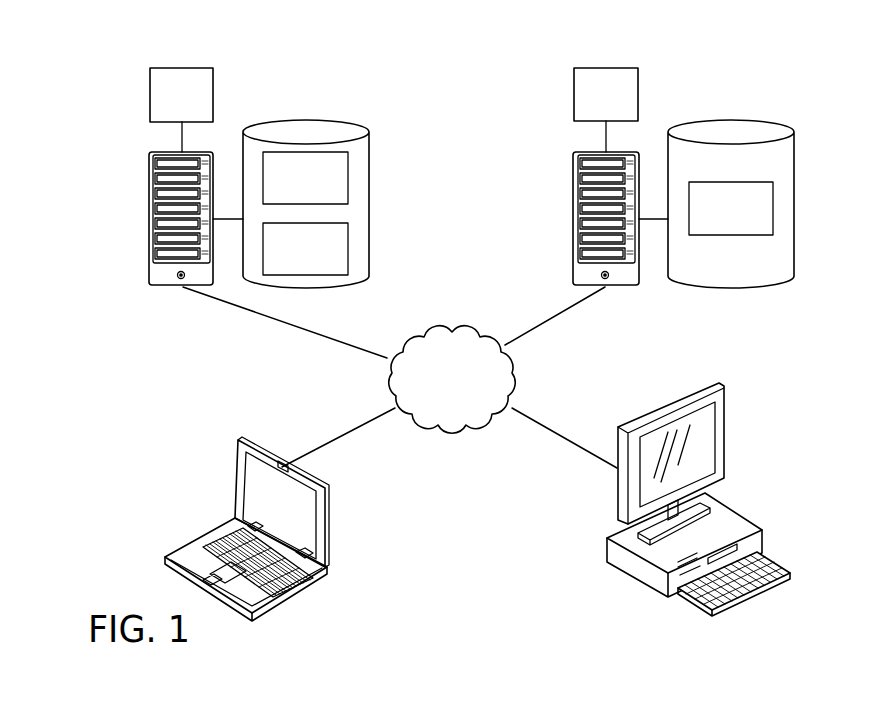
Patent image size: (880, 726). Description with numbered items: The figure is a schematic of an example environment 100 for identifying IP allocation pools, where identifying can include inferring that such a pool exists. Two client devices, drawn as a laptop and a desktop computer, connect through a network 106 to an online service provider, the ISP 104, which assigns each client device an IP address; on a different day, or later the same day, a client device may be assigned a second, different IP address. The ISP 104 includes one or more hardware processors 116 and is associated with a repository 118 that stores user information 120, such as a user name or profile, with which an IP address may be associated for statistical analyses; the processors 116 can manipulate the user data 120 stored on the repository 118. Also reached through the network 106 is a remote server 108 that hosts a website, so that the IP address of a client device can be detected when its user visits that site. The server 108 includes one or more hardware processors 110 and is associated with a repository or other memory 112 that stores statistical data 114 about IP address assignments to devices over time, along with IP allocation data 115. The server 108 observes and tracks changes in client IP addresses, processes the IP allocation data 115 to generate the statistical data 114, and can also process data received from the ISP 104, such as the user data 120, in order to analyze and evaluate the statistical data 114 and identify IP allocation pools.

The environment 100 is at (100, 305).
The online service provider (ISP) 104 is at (573, 212).
The network 106 is at (470, 395).
The remote server 108 is at (149, 212).
The hardware processors 110 is at (202, 110).
The repository 112 is at (306, 114).
The statistical data 114 is at (327, 193).
The IP allocation data 115 is at (327, 268).
The hardware processors 116 is at (627, 110).
The repository 118 is at (731, 119).
The user information 120 is at (750, 226).